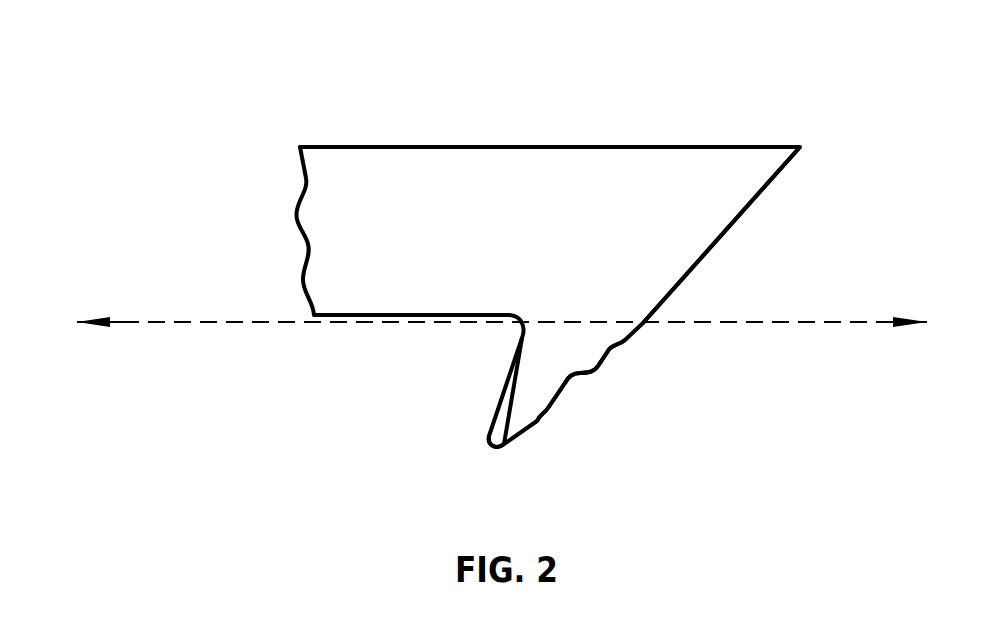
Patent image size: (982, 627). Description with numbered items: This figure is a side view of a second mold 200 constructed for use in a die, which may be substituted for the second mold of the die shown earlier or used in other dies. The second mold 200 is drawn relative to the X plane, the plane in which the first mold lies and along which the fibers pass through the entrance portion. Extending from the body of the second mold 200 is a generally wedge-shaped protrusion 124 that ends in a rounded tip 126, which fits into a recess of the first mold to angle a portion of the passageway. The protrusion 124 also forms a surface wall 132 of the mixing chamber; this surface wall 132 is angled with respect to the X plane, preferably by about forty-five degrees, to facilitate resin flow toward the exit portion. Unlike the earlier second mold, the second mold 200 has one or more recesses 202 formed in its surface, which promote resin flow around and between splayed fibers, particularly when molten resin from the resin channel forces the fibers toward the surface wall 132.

The second mold 200 is at (764, 83).
The surface wall 132 is at (722, 237).
The protrusion 124 is at (520, 365).
The rounded tip 126 is at (503, 440).
The recesses 202 is at (550, 423).
The X plane X is at (486, 323).